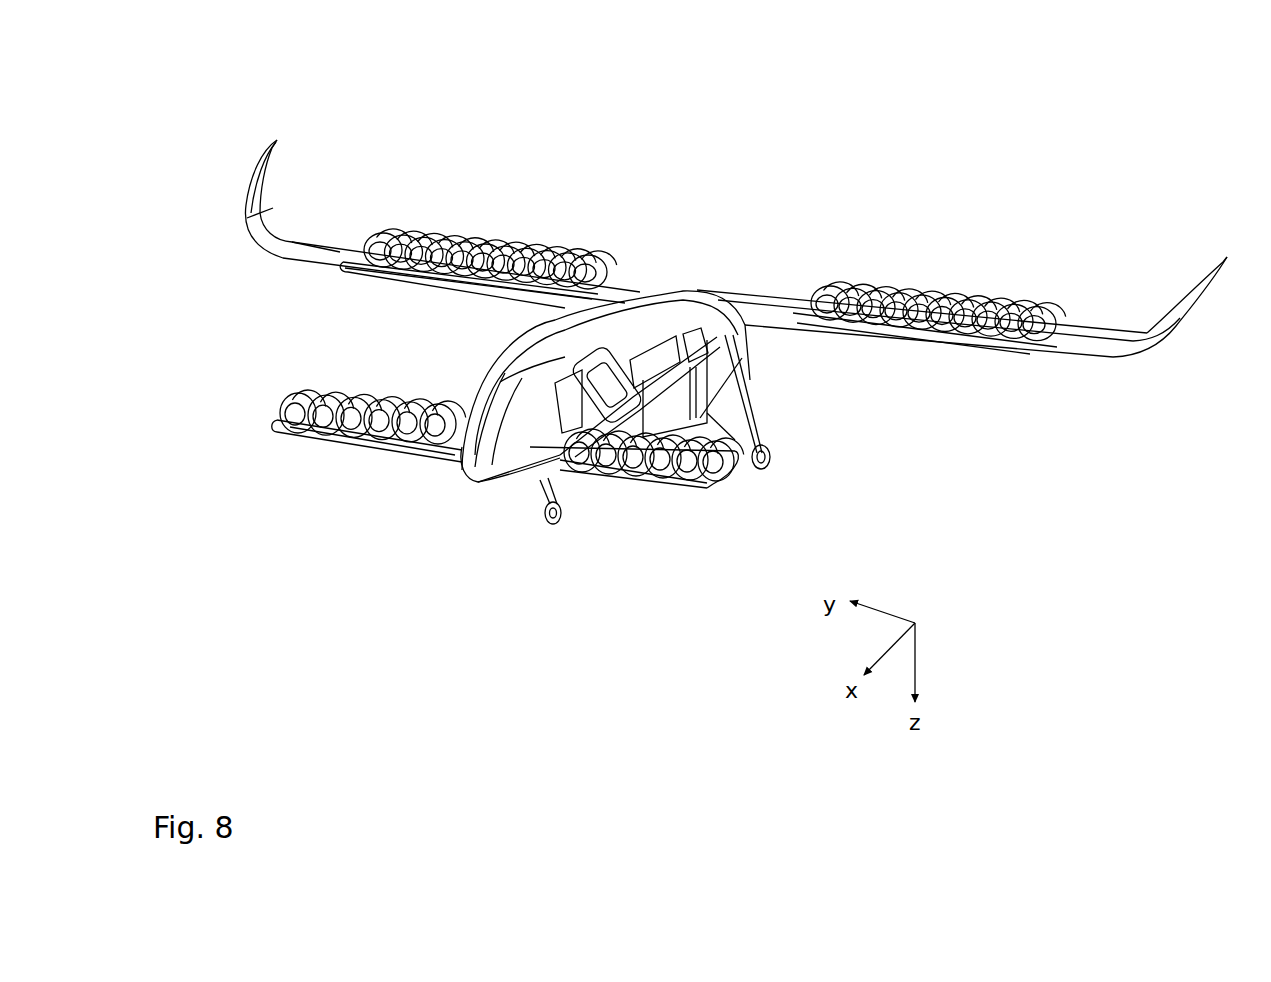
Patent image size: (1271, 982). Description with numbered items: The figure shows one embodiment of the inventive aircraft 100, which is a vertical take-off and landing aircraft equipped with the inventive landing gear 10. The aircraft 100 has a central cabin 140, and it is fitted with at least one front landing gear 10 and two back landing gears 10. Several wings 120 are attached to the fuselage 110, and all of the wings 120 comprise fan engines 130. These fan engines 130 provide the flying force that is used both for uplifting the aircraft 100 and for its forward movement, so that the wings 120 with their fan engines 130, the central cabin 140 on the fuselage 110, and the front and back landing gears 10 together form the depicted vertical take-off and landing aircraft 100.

The aircraft 100 is at (235, 100).
The fuselage 110 is at (752, 383).
The landing gear 10 is at (757, 433).
The wings 120 is at (265, 236).
The fan engines 130 is at (593, 250).
The central cabin 140 is at (497, 377).